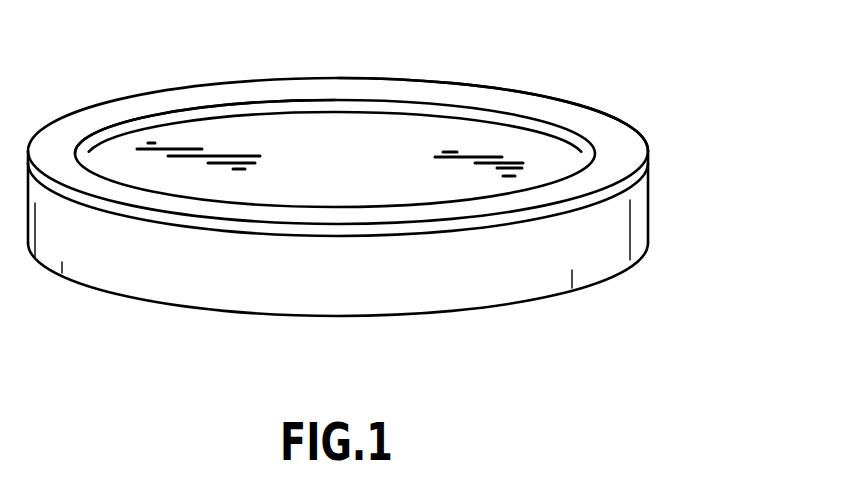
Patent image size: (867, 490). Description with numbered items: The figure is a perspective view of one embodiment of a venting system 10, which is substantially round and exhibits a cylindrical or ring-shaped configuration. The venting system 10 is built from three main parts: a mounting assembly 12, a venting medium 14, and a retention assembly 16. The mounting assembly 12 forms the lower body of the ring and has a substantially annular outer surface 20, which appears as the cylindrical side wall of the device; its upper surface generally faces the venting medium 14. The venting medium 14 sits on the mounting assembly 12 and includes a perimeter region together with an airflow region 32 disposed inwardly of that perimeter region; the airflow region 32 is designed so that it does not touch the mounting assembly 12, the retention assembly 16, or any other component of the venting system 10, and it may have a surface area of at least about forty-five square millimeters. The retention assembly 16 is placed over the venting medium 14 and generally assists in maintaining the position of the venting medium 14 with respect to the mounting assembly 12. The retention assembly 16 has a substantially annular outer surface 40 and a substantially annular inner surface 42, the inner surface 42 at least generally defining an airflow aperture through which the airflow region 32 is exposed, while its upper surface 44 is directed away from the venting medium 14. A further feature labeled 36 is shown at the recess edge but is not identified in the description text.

The venting system 10 is at (408, 198).
The mounting assembly 12 is at (340, 295).
The venting medium 14 is at (365, 168).
The retention assembly 16 is at (477, 95).
The outer surface 20 is at (127, 272).
The airflow region 32 is at (272, 130).
The recess rim edge 36 is at (127, 148).
The outer surface 40 is at (627, 188).
The inner surface 42 is at (416, 105).
The upper surface 44 is at (578, 115).